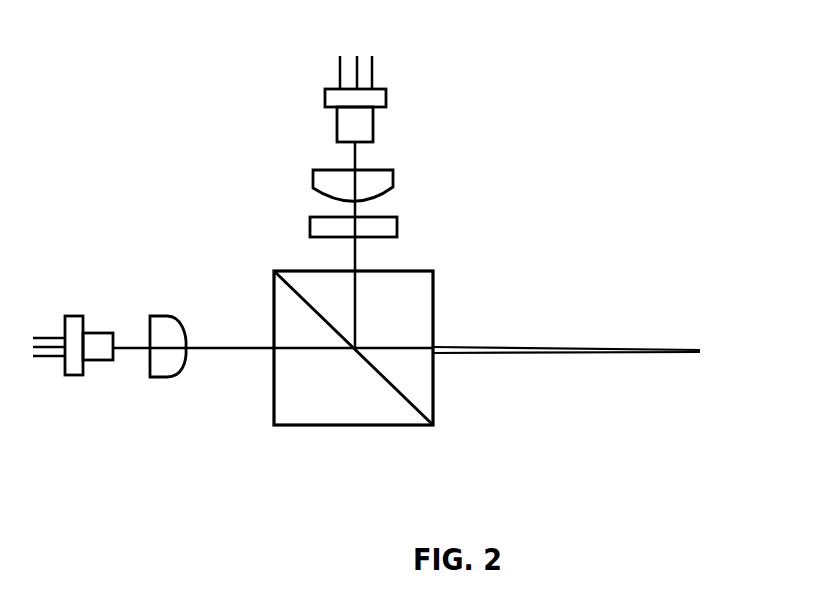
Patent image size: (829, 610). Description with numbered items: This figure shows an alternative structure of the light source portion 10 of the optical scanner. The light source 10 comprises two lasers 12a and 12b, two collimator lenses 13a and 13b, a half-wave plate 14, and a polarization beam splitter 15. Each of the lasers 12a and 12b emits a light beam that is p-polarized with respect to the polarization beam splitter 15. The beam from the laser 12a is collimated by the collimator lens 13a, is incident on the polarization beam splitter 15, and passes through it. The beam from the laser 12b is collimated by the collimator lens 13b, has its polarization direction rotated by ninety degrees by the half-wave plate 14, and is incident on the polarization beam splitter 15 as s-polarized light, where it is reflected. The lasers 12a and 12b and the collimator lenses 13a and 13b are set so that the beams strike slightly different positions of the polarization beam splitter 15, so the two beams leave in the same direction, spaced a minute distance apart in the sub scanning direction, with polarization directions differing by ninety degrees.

The light source portion 10 is at (283, 513).
The laser 12a is at (73, 368).
The laser 12b is at (367, 122).
The collimator lens 13a is at (163, 367).
The collimator lens 13b is at (384, 181).
The half-wave plate 14 is at (390, 228).
The polarization beam splitter 15 is at (353, 410).